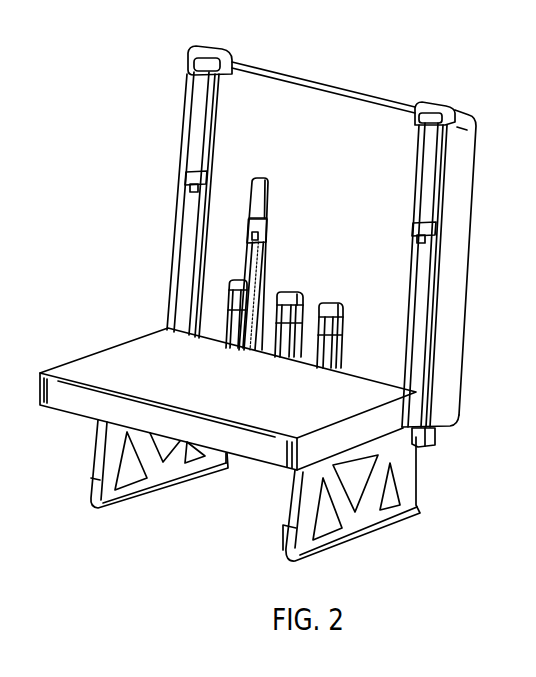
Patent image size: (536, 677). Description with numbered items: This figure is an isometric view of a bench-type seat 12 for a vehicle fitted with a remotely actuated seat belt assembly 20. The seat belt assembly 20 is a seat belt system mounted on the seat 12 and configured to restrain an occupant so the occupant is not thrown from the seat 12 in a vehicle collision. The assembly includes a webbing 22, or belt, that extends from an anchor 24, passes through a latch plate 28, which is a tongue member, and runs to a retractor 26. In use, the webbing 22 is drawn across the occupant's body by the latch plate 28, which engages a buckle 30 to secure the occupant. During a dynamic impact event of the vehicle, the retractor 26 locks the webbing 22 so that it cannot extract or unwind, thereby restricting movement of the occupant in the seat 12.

The seat 12 is at (112, 362).
The seat belt assembly 20 is at (150, 177).
The webbing 22 is at (418, 301).
The anchor 24 is at (425, 410).
The retractor 26 is at (423, 443).
The latch plate 28 is at (418, 245).
The buckle 30 is at (320, 306).